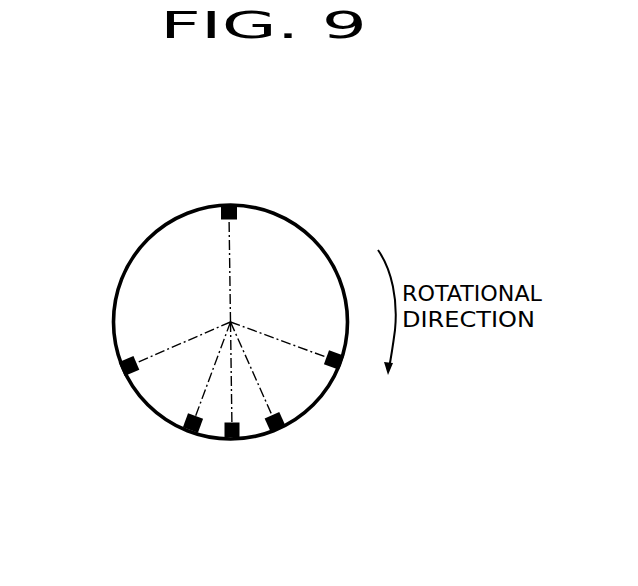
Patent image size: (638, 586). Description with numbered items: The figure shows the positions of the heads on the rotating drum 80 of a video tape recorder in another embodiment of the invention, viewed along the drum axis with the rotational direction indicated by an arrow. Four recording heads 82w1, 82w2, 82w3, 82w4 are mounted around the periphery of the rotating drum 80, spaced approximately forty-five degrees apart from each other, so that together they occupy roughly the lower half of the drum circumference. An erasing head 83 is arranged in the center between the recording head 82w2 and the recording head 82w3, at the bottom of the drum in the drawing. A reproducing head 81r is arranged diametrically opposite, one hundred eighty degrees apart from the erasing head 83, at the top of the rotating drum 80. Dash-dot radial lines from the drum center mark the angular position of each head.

The rotating drum 80 is at (318, 233).
The reproducing head 81r is at (229, 205).
The recording head 82w1 is at (123, 368).
The recording head 82w2 is at (188, 428).
The recording head 82w3 is at (275, 424).
The recording head 82w4 is at (336, 362).
The erasing head 83 is at (232, 440).